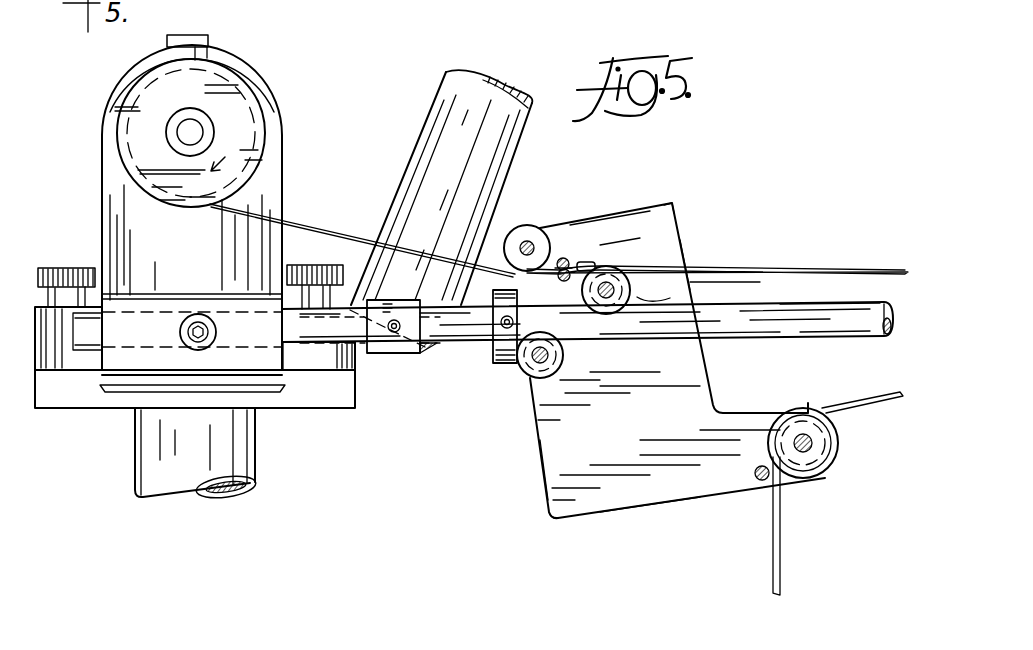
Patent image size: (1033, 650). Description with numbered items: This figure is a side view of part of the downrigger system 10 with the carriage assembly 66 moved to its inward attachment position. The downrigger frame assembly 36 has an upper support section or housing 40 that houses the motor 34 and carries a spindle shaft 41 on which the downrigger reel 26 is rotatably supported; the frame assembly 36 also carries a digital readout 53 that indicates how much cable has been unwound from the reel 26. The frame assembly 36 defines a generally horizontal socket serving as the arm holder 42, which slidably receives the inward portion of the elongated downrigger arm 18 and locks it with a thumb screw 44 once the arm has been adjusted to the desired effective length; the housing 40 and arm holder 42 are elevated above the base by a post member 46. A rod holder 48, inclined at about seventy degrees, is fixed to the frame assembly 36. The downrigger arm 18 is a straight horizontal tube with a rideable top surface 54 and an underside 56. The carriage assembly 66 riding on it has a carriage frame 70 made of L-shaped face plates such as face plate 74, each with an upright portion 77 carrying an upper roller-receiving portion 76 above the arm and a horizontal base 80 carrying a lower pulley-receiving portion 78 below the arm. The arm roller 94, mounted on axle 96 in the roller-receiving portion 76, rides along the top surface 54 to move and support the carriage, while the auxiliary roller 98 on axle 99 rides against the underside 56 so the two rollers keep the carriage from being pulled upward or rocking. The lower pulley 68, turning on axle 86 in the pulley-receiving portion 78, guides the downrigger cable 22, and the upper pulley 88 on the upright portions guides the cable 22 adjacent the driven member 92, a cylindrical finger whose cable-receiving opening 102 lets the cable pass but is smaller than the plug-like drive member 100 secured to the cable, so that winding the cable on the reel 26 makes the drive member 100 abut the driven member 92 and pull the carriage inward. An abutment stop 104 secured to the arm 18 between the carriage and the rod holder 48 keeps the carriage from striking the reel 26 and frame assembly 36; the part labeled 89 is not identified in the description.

The downrigger system 10 is at (468, 488).
The downrigger arm 18 is at (745, 320).
The downrigger cable 22 is at (333, 231).
The downrigger reel 26 is at (118, 113).
The motor 34 is at (234, 60).
The downrigger frame assembly 36 is at (101, 412).
The upper support section 40 is at (116, 237).
The spindle axle 41 is at (189, 126).
The arm holder 42 is at (305, 345).
The thumb screw 44 is at (206, 315).
The post member 46 is at (152, 459).
The rod holder 48 is at (447, 117).
The digital indicator 53 is at (196, 35).
The rideable top surface 54 is at (786, 300).
The underside 56 is at (854, 332).
The carriage assembly 66 is at (647, 202).
The lower pulley 68 is at (833, 433).
The carriage frame 70 is at (673, 203).
The face plate 74 is at (541, 454).
The upper roller-receiving portion 76 is at (654, 287).
The upright portion 77 is at (689, 248).
The lower pulley-receiving portion 78 is at (763, 409).
The horizontal lower portion 80 is at (634, 504).
The axle 86 is at (814, 451).
The upper pulley 88 is at (518, 227).
The axle 89 is at (520, 248).
The driven member 92 is at (562, 258).
The arm roller 94 is at (624, 273).
The axle 96 is at (606, 300).
The auxiliary roller 98 is at (527, 367).
The axle 99 is at (541, 364).
The drive member 100 is at (588, 261).
The cable-receiving opening 102 is at (566, 258).
The abutment stop 104 is at (503, 344).